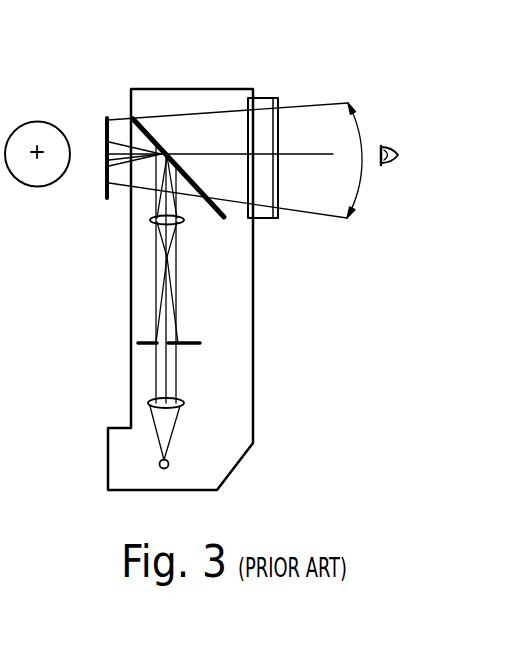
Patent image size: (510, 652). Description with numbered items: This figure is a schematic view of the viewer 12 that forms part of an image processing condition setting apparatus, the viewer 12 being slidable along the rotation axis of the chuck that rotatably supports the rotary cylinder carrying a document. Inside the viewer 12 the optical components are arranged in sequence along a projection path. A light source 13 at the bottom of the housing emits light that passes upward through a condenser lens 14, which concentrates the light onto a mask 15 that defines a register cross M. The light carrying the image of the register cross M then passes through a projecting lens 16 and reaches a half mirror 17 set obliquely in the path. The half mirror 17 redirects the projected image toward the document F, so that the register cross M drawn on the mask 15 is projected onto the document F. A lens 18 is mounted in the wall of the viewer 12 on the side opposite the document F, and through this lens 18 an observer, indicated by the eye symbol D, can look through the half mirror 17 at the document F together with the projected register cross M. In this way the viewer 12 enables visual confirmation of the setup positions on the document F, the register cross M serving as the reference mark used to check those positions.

The viewer 12 is at (193, 252).
The light source 13 is at (168, 468).
The condenser lens 14 is at (148, 407).
The mask 15 is at (150, 343).
The projecting lens 16 is at (152, 220).
The half mirror 17 is at (162, 136).
The lens 18 is at (264, 98).
The register cross M is at (42, 148).
The document F is at (104, 130).
The observer's eye D is at (389, 155).